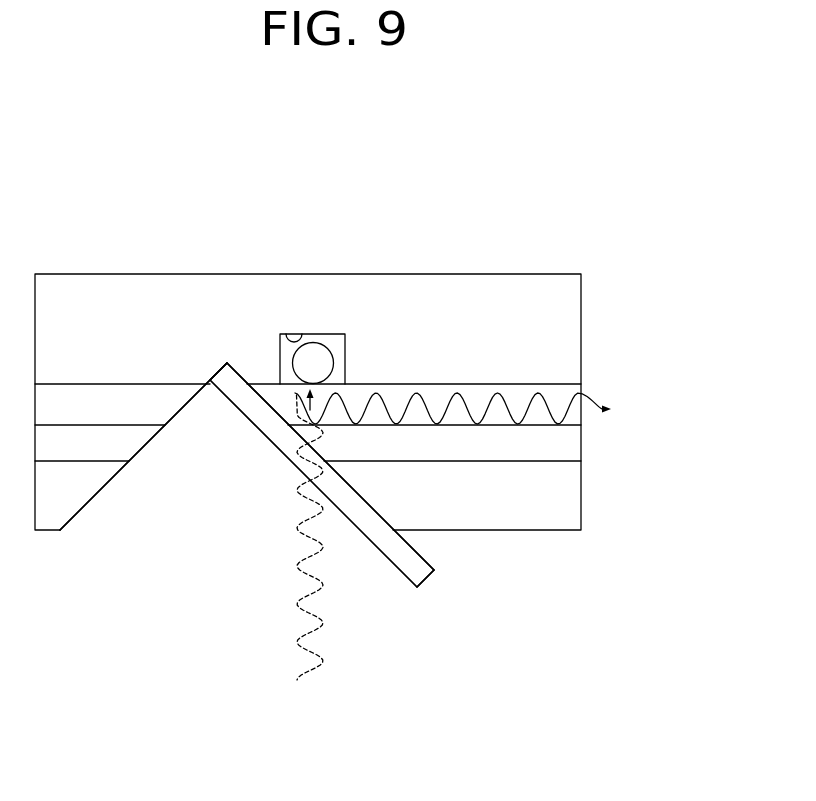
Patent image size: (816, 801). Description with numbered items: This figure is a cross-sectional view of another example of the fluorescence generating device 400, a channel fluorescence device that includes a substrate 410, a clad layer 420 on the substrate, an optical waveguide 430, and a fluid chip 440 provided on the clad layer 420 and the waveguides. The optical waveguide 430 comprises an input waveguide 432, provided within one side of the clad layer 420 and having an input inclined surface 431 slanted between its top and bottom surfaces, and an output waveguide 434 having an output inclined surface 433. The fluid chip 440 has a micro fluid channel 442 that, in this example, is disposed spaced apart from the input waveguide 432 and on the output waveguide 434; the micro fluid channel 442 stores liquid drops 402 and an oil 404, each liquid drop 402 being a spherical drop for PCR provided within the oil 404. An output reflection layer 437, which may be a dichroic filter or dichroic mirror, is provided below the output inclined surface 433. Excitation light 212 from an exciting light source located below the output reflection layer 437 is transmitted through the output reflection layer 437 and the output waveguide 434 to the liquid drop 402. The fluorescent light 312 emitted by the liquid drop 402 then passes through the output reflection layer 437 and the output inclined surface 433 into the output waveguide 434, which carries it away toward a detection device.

The fluorescence generating device 400 is at (634, 181).
The substrate 410 is at (570, 498).
The clad layer 420 is at (570, 443).
The fluid chip 440 is at (570, 330).
The optical waveguide 430 is at (275, 552).
The input inclined surface 431 is at (193, 397).
The input waveguide 432 is at (160, 406).
The output inclined surface 433 is at (262, 383).
The output waveguide 434 is at (287, 405).
The output reflection layer 437 is at (422, 577).
The micro fluid channel 442 is at (287, 337).
The liquid drop 402 is at (312, 352).
The oil 404 is at (335, 340).
The fluorescent light 312 is at (498, 392).
The excitation light 212 is at (303, 681).